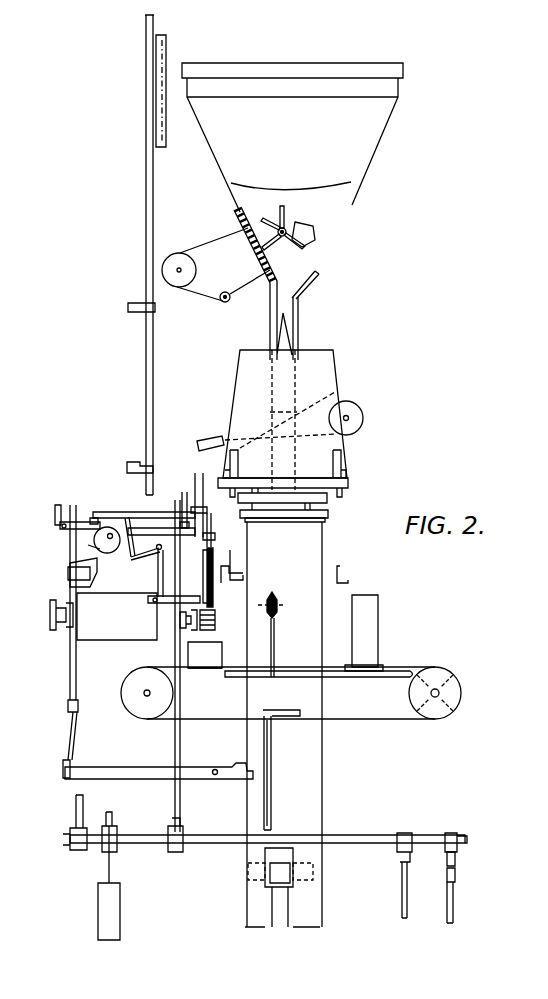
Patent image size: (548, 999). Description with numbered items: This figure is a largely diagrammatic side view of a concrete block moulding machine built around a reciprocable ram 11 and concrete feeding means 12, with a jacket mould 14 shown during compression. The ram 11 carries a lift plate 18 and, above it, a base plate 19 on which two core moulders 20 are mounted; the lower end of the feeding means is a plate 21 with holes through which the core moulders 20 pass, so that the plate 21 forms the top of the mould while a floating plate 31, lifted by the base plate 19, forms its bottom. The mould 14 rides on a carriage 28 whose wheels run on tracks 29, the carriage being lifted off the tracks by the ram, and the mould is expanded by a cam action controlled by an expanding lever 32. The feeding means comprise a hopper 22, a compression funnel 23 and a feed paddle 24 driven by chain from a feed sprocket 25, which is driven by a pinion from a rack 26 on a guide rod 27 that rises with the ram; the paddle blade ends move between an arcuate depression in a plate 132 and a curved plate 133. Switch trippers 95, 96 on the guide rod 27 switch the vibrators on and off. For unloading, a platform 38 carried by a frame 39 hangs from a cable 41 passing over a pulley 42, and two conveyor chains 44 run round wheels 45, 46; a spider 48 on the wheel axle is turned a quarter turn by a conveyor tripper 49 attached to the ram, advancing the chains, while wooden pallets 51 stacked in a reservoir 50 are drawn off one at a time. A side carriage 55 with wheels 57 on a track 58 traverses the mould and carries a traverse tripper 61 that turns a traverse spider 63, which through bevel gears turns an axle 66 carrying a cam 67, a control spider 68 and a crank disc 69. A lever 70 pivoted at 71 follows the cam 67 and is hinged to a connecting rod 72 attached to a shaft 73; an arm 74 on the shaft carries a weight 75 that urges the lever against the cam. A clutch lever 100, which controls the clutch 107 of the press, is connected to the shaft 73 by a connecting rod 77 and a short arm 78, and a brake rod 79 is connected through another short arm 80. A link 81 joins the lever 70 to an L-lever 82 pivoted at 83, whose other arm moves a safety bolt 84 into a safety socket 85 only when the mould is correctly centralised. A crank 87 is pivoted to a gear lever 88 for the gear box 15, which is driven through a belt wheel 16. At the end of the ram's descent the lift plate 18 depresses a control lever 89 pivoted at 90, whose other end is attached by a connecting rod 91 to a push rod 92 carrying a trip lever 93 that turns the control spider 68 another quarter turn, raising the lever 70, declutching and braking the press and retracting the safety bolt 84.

The reciprocable ram 11 is at (300, 556).
The concrete feeding means 12 is at (330, 222).
The jacket mould 14 is at (318, 360).
The gear box 15 is at (98, 630).
The belt wheel 16 is at (50, 614).
The lift plate 18 is at (327, 519).
The base plate 19 is at (330, 513).
The core moulders 20 is at (330, 438).
The plate 21 is at (302, 410).
The hopper 22 is at (363, 130).
The compression funnel 23 is at (300, 283).
The feed paddle 24 is at (278, 214).
The feed sprocket 25 is at (182, 258).
The rack 26 is at (167, 130).
The guide rod 27 is at (147, 177).
The carriage 28 is at (347, 483).
The tracks 29 is at (233, 566).
The floating plate 31 is at (332, 503).
The expanding lever 32 is at (213, 437).
The platform 38 is at (298, 711).
The frame 39 is at (272, 742).
The cable 41 is at (275, 628).
The pulley 42 is at (278, 598).
The conveyor chains 44 is at (190, 719).
The wheels 45 is at (135, 700).
The wheels 46 is at (431, 715).
The spider 48 is at (447, 673).
The conveyor tripper 49 is at (412, 676).
The reservoir 50 is at (215, 654).
The wooden pallets 51 is at (213, 666).
The side carriage 55 is at (218, 556).
The wheels 57 is at (213, 544).
The track 58 is at (240, 578).
The traverse tripper 61 is at (213, 602).
The traverse spider 63 is at (198, 500).
The axle 66 is at (109, 532).
The cam 67 is at (90, 547).
The control spider 68 is at (93, 520).
The crank disc 69 is at (98, 560).
The lever 70 is at (182, 492).
The pivot 71 is at (158, 512).
The connecting rod 72 is at (175, 756).
The shaft 73 is at (378, 837).
The arm 74 is at (110, 816).
The weight 75 is at (120, 898).
The connecting rod 77 is at (455, 878).
The short arm 78 is at (455, 857).
The brake rod 79 is at (402, 888).
The short arm 80 is at (406, 834).
The link 81 is at (118, 530).
The L-lever 82 is at (145, 556).
The pivot 83 is at (158, 543).
The safety bolt 84 is at (154, 601).
The safety socket 85 is at (173, 630).
The crank 87 is at (66, 517).
The gear lever 88 is at (55, 514).
The control lever 89 is at (107, 776).
The pivot 90 is at (215, 776).
The connecting rod 91 is at (68, 746).
The push rod 92 is at (70, 684).
The trip lever 93 is at (70, 569).
The switch tripper 95 is at (130, 462).
The switch tripper 96 is at (155, 311).
The clutch lever 100 is at (455, 908).
The clutch 107 is at (78, 817).
The plate 132 is at (250, 238).
The curved plate 133 is at (316, 235).